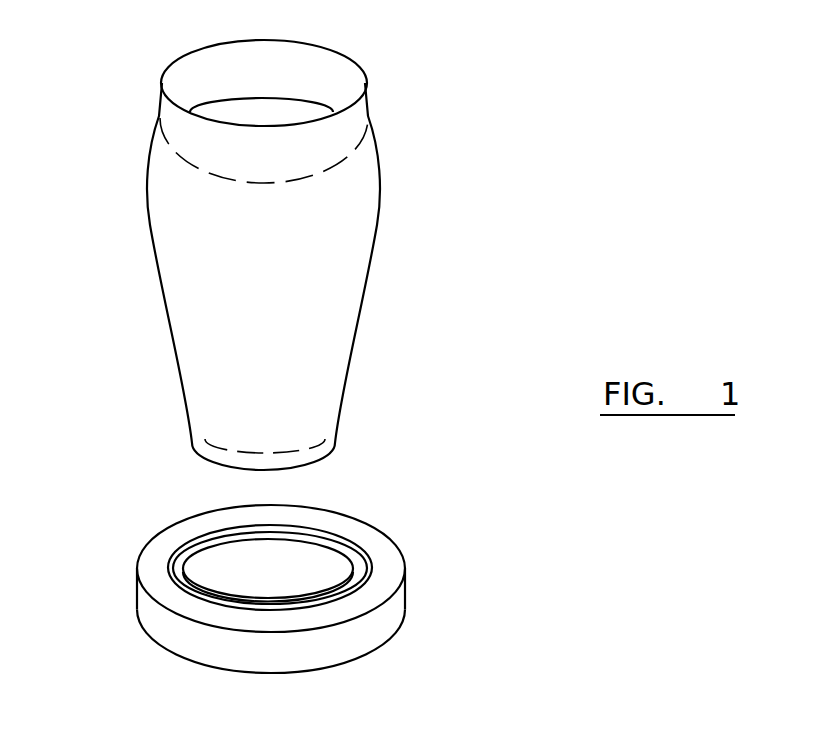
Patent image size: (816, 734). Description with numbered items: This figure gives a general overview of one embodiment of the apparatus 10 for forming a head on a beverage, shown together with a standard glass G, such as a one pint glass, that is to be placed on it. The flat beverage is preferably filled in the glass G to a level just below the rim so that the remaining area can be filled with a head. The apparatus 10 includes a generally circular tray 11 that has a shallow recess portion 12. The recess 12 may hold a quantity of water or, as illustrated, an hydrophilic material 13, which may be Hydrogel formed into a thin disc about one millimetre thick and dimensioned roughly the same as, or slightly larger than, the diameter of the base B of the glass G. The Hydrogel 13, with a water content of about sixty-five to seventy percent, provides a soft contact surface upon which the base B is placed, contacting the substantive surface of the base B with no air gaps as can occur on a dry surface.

The glass G is at (332, 271).
The base of glass B is at (302, 478).
The apparatus 10 is at (279, 565).
The tray 11 is at (390, 620).
The recess portion 12 is at (178, 572).
The hydrophilic material 13 is at (233, 570).